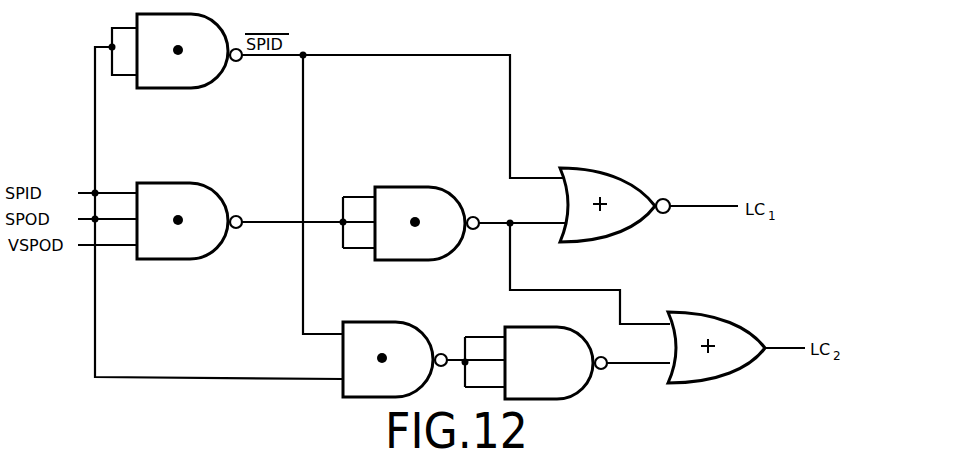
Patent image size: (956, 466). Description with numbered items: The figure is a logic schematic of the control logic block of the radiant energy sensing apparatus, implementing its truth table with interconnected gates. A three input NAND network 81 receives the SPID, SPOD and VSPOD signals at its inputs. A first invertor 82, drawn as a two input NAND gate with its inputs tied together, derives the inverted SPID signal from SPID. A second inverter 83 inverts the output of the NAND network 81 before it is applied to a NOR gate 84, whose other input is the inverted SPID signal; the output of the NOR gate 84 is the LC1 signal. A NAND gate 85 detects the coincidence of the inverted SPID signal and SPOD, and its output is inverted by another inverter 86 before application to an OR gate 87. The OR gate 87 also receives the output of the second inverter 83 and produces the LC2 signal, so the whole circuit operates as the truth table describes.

The three input NAND network 81 is at (204, 184).
The first invertor 82 is at (200, 15).
The second inverter 83 is at (452, 188).
The NOR gate 84 is at (622, 170).
The NAND gate 85 is at (413, 322).
The inverter 86 is at (566, 327).
The OR gate 87 is at (744, 301).